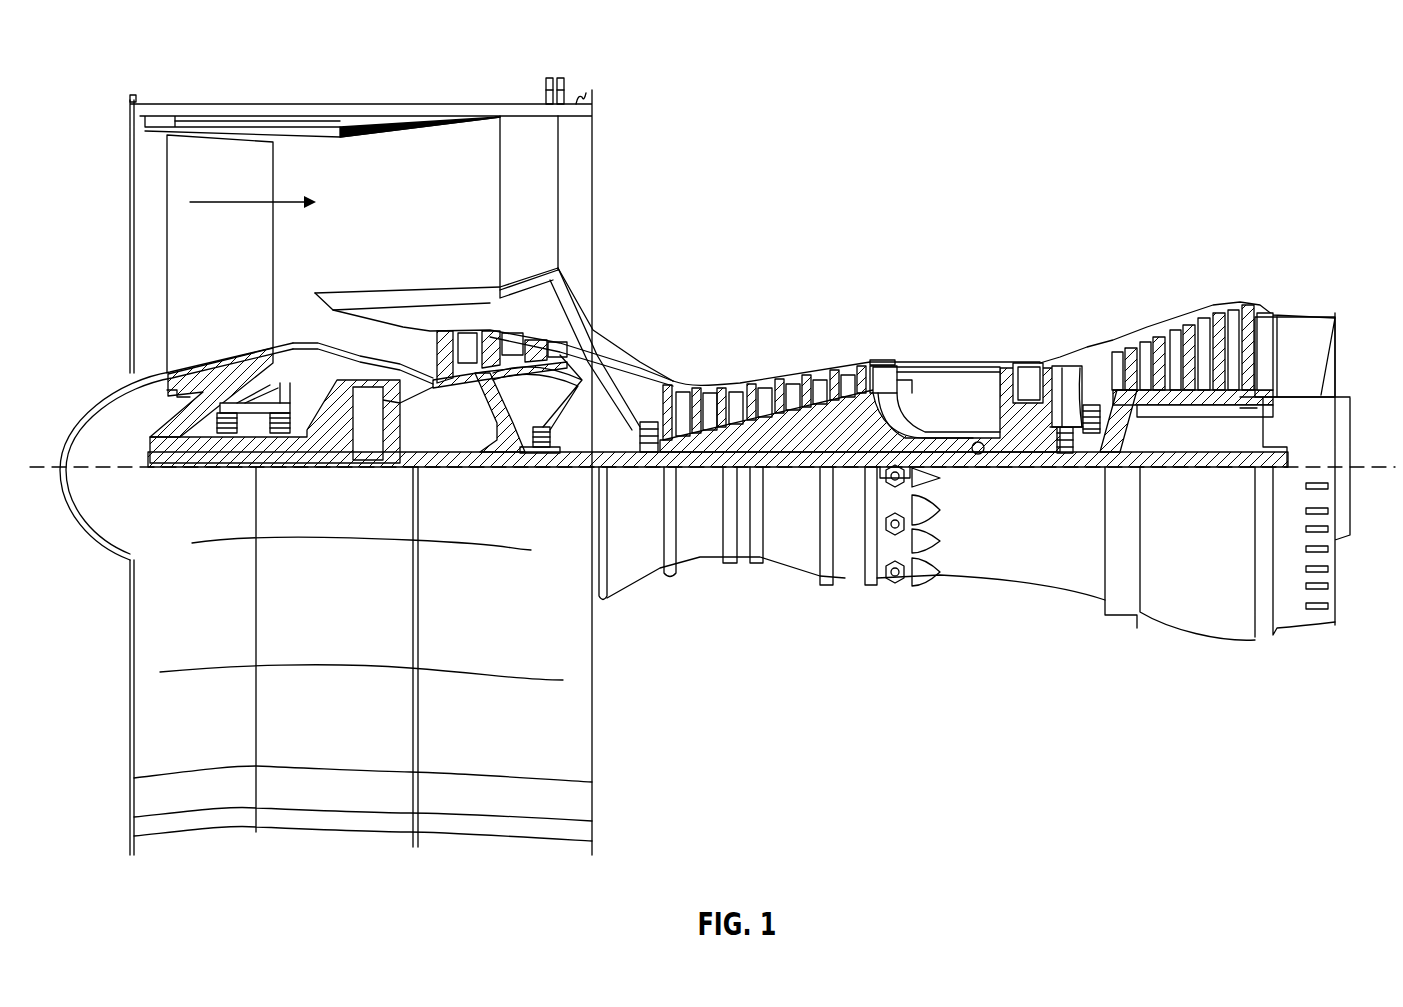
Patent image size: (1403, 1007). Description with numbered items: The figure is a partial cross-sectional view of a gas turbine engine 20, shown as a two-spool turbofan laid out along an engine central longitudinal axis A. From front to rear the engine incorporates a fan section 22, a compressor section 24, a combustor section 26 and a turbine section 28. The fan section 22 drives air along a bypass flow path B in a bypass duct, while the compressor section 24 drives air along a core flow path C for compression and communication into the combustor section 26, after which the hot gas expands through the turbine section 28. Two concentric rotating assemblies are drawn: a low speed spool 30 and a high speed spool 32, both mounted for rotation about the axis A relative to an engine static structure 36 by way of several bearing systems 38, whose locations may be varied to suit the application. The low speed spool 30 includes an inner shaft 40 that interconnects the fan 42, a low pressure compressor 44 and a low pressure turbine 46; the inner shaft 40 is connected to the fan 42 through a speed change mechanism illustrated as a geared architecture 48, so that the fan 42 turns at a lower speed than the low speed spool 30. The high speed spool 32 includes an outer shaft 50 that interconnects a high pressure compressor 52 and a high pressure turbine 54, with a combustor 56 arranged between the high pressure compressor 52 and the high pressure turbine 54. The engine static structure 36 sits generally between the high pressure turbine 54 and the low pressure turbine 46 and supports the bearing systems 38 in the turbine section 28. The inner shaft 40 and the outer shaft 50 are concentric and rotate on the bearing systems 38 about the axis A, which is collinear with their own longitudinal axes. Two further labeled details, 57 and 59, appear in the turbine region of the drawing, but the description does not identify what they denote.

The gas turbine engine 20 is at (1183, 138).
The fan section 22 is at (205, 94).
The compressor section 24 is at (658, 328).
The combustor section 26 is at (953, 320).
The turbine section 28 is at (1083, 284).
The low speed spool 30 is at (805, 476).
The high speed spool 32 is at (848, 425).
The engine static structure 36 is at (847, 592).
The bearing systems 38 is at (540, 453).
The inner shaft 40 is at (612, 465).
The fan 42 is at (204, 243).
The low pressure compressor 44 is at (520, 340).
The low pressure turbine 46 is at (1213, 328).
The geared architecture 48 is at (370, 458).
The outer shaft 50 is at (980, 456).
The high pressure compressor 52 is at (793, 383).
The high pressure turbine 54 is at (1032, 366).
The combustor 56 is at (385, 108).
The turbine inlet strut 57 is at (1083, 338).
The turbine rotor disk arm 59 is at (1098, 382).
The engine central longitudinal axis A is at (1372, 465).
The bypass flow path B is at (253, 200).
The core flow path C is at (306, 329).